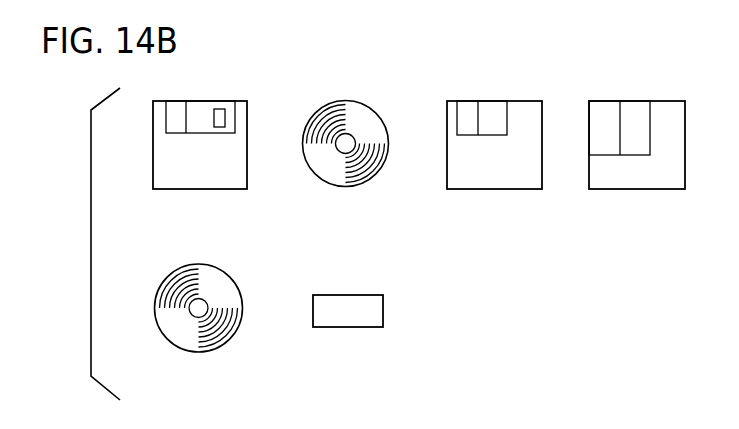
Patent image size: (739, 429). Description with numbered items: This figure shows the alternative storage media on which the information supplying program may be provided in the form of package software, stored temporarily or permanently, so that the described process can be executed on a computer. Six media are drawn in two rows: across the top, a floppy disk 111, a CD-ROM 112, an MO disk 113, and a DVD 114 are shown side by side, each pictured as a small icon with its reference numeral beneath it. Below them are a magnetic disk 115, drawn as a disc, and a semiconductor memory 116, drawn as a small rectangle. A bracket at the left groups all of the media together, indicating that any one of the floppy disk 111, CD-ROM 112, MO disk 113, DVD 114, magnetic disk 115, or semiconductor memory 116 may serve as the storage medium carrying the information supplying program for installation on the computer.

The floppy disk 111 is at (200, 189).
The CD-ROM 112 is at (347, 187).
The MO disk 113 is at (495, 189).
The DVD 114 is at (638, 189).
The magnetic disk 115 is at (198, 352).
The semiconductor memory 116 is at (350, 327).